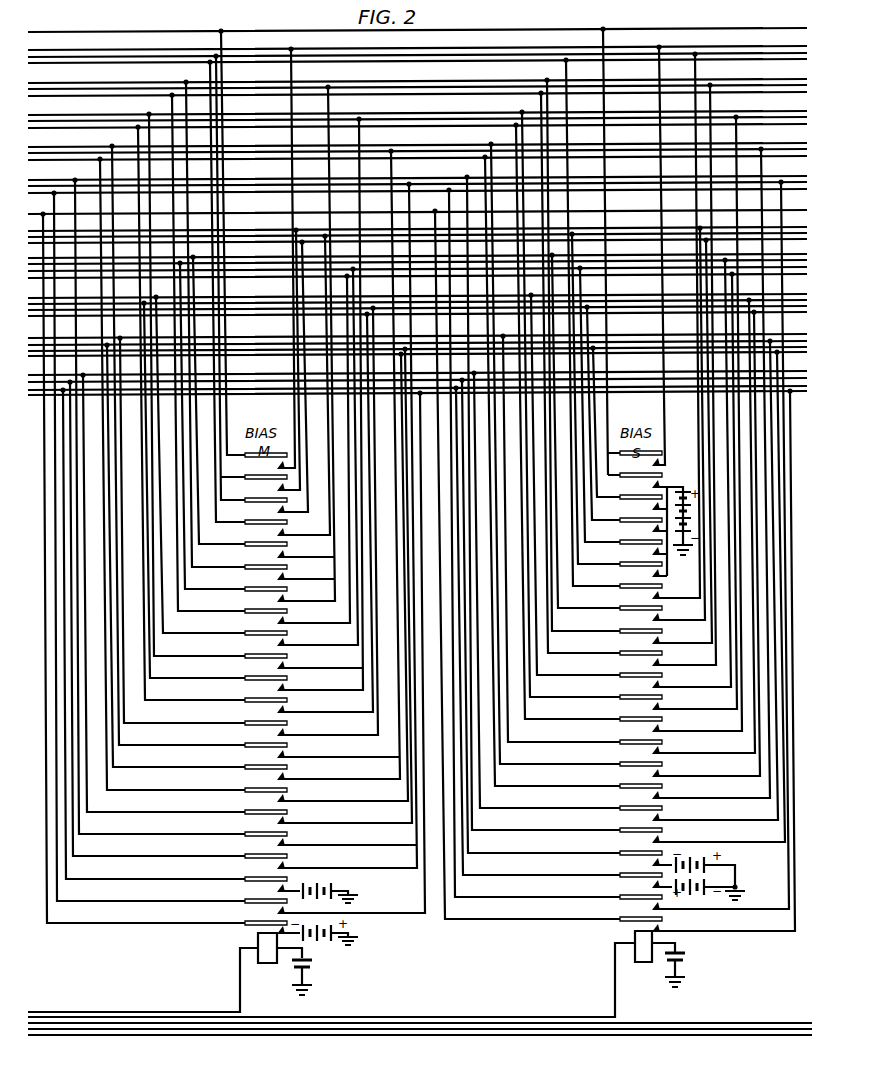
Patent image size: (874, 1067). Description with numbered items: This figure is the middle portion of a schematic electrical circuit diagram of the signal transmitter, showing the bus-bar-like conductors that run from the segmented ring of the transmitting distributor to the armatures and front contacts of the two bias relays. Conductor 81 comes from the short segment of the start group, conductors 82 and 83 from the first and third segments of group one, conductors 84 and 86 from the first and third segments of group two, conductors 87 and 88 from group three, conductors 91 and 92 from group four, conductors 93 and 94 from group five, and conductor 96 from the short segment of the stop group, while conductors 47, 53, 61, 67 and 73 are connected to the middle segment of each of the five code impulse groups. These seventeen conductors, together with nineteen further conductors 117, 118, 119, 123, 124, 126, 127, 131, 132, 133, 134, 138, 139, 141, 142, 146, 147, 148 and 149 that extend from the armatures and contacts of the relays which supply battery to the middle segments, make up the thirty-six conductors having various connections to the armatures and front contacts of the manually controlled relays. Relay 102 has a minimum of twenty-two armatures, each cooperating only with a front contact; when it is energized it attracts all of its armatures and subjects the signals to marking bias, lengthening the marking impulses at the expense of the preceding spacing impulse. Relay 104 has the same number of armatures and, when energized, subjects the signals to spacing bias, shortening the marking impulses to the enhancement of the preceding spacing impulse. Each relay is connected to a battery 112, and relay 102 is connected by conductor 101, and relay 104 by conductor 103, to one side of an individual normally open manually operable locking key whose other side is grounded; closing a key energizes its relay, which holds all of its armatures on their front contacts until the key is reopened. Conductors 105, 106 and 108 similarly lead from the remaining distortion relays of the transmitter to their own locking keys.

The conductor 81 is at (52, 32).
The conductor 82 is at (52, 50).
The conductor 47 is at (77, 57).
The conductor 83 is at (102, 63).
The conductor 84 is at (52, 83).
The conductor 53 is at (77, 89).
The conductor 86 is at (102, 96).
The conductor 87 is at (52, 115).
The conductor 61 is at (77, 121).
The conductor 88 is at (102, 128).
The conductor 91 is at (52, 147).
The conductor 67 is at (77, 153).
The conductor 92 is at (102, 160).
The conductor 93 is at (52, 180).
The conductor 73 is at (77, 186).
The conductor 94 is at (262, 187).
The conductor 96 is at (52, 212).
The conductor 118 is at (253, 229).
The conductor 119 is at (264, 237).
The conductor 117 is at (323, 241).
The conductor 123 is at (253, 258).
The conductor 126 is at (264, 264).
The conductor 127 is at (353, 269).
The conductor 124 is at (388, 258).
The conductor 131 is at (253, 296).
The conductor 133 is at (264, 302).
The conductor 134 is at (388, 306).
The conductor 132 is at (641, 311).
The conductor 138 is at (253, 337).
The conductor 141 is at (264, 344).
The conductor 142 is at (633, 347).
The conductor 139 is at (662, 352).
The conductor 146 is at (645, 370).
The conductor 149 is at (253, 390).
The conductor 148 is at (264, 381).
The conductor 147 is at (645, 391).
The conductor 101 is at (75, 1011).
The conductor 103 is at (123, 1016).
The conductor 105 is at (46, 1026).
The conductor 106 is at (90, 1032).
The conductor 108 is at (137, 1038).
The relay 102 is at (273, 964).
The relay 104 is at (648, 964).
The battery 112 is at (313, 968).